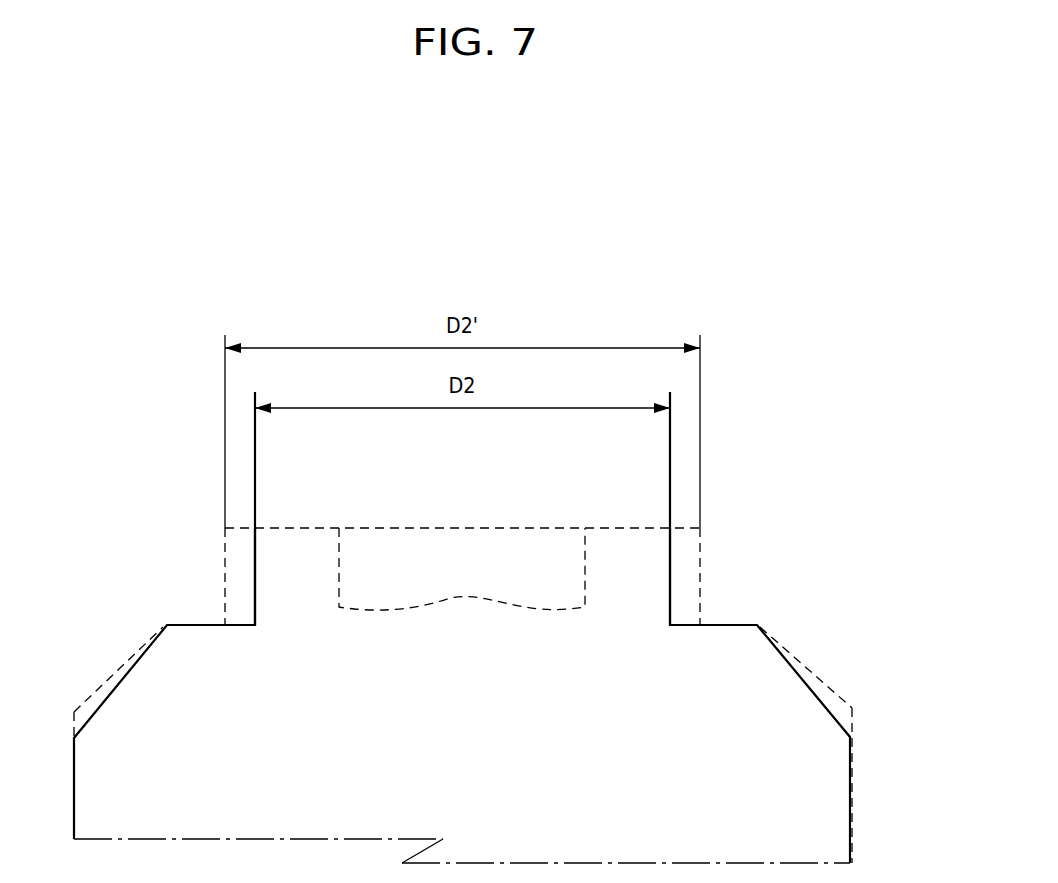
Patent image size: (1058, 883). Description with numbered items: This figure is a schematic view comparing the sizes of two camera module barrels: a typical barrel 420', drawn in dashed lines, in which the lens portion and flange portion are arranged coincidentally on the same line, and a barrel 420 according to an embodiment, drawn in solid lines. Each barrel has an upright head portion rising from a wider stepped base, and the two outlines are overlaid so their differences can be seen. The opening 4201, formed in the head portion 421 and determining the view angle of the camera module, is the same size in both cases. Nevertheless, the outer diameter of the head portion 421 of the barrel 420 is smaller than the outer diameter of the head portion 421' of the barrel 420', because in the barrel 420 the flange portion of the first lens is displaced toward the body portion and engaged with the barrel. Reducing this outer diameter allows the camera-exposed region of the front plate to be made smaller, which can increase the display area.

The barrel 420 is at (500, 627).
The barrel 420' is at (483, 738).
The head portion 421 is at (532, 576).
The head portion 421' is at (519, 566).
The opening 4201 is at (446, 562).